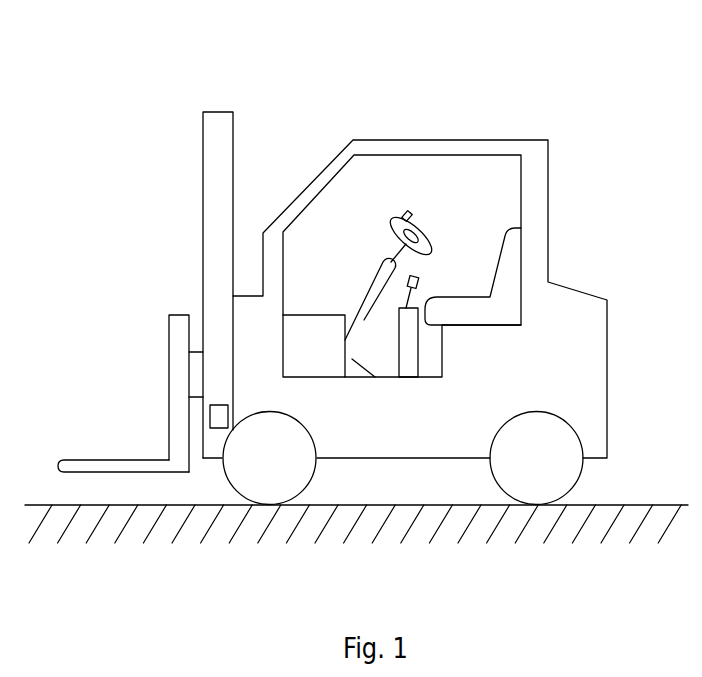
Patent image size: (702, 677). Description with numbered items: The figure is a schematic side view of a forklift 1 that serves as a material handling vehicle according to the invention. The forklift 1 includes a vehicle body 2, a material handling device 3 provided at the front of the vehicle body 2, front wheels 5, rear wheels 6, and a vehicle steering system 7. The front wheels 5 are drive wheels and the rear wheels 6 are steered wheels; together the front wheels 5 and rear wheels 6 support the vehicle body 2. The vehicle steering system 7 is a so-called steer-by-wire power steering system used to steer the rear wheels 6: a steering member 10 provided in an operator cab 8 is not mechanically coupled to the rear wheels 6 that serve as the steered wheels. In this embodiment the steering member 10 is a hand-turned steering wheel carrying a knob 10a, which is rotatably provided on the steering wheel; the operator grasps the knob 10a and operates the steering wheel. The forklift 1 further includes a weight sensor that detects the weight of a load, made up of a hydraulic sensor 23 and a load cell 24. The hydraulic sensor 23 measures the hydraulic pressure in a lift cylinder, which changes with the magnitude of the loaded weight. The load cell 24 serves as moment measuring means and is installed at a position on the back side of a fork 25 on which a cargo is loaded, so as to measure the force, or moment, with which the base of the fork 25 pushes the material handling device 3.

The forklift 1 is at (592, 227).
The vehicle body 2 is at (537, 265).
The material handling device 3 is at (194, 198).
The front wheels 5 is at (302, 471).
The rear wheels 6 is at (568, 472).
The vehicle steering system 7 is at (375, 308).
The operator cab 8 is at (488, 185).
The steering member 10 is at (417, 222).
The knob 10a is at (405, 213).
The hydraulic sensor 23 is at (210, 416).
The load cell 24 is at (196, 374).
The fork 25 is at (102, 460).